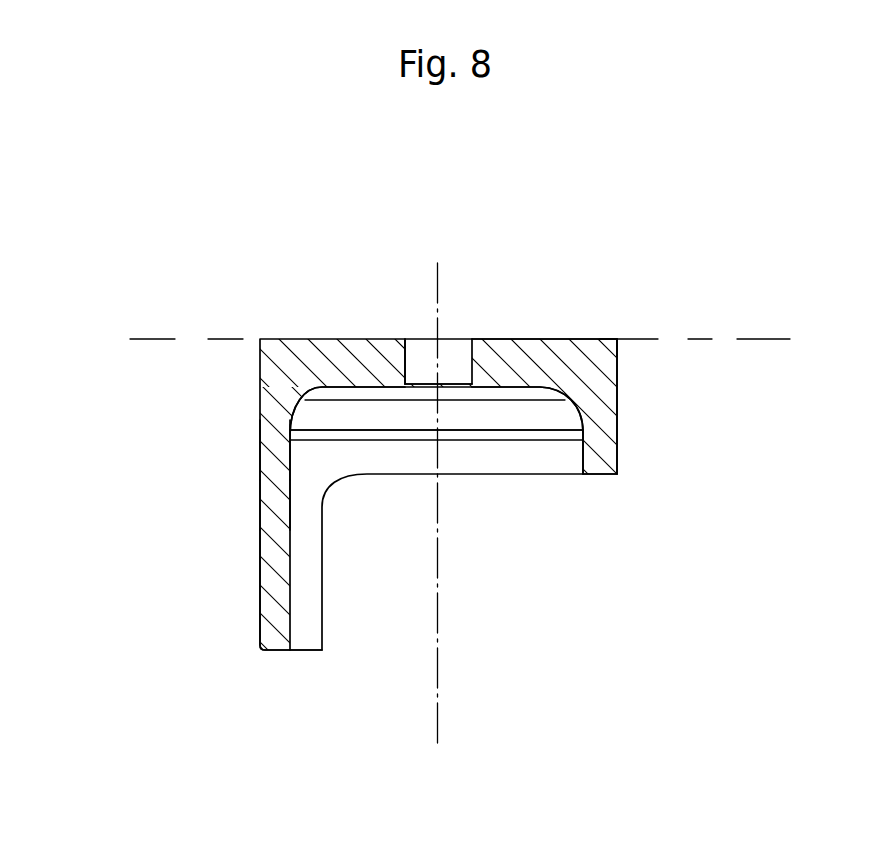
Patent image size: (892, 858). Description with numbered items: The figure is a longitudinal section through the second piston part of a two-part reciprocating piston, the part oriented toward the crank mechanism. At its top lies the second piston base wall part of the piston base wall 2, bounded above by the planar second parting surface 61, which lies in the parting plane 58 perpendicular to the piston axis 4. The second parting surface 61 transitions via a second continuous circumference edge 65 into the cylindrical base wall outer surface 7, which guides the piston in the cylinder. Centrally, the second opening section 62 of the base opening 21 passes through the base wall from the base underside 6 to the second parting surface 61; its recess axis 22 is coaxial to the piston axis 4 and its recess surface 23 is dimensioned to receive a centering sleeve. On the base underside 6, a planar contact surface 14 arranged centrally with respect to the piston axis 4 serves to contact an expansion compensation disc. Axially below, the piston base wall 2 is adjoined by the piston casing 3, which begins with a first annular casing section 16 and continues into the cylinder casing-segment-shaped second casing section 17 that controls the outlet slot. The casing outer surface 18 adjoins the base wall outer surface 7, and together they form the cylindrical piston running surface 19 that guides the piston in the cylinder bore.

The piston base wall 2 is at (347, 365).
The piston casing 3 is at (593, 429).
The piston axis 4 is at (501, 522).
The recess axis 22 is at (438, 713).
The base underside 6 is at (516, 390).
The base wall outer surface 7 is at (618, 363).
The contact surface 14 is at (376, 390).
The first annular casing section 16 is at (600, 450).
The second casing section 17 is at (267, 564).
The casing outer surface 18 is at (259, 500).
The piston running surface 19 is at (259, 452).
The base opening 21 is at (453, 362).
The recess surface 23 is at (406, 357).
The parting plane 58 is at (152, 338).
The second parting surface 61 is at (583, 339).
The second opening section 62 is at (423, 372).
The second continuous circumference edge 65 is at (618, 339).